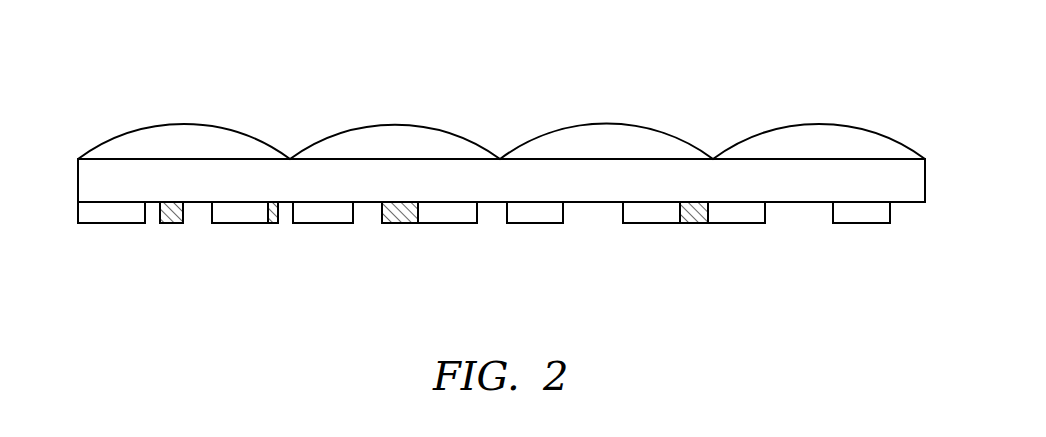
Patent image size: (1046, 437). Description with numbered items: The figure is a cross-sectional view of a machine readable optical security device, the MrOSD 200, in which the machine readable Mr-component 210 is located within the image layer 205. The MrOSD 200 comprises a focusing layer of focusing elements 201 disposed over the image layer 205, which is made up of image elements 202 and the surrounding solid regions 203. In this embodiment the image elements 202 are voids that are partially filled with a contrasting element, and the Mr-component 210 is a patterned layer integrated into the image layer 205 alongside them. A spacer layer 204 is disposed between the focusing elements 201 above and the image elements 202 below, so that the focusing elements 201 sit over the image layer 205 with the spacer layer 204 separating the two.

The MrOSD 200 is at (98, 97).
The focusing elements 201 is at (390, 120).
The image elements 202 is at (172, 227).
The solid regions 203 is at (460, 228).
The spacer layer 204 is at (932, 182).
The image layer 205 is at (73, 210).
The Mr-component 210 is at (597, 228).